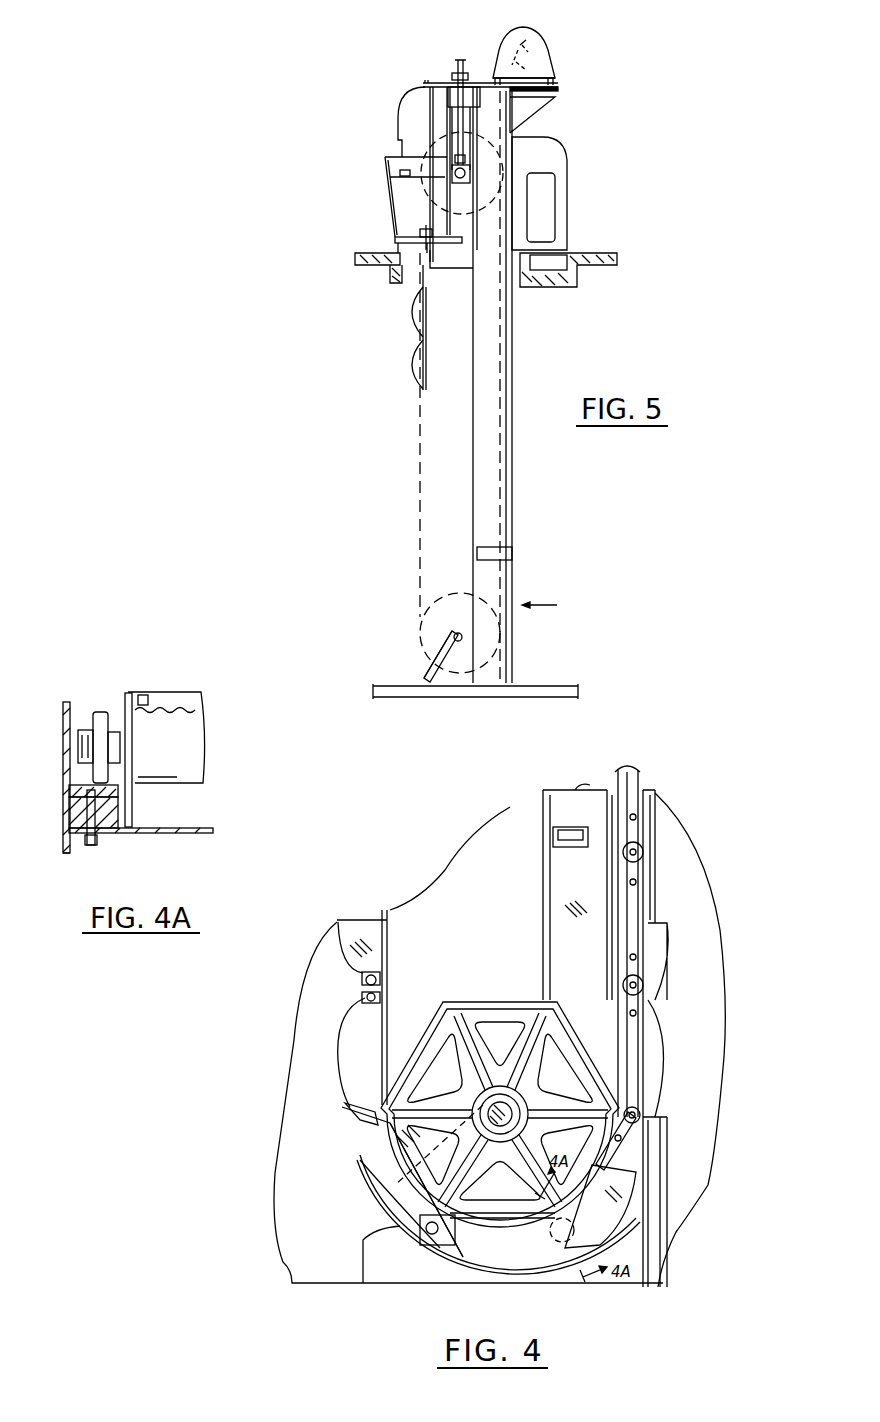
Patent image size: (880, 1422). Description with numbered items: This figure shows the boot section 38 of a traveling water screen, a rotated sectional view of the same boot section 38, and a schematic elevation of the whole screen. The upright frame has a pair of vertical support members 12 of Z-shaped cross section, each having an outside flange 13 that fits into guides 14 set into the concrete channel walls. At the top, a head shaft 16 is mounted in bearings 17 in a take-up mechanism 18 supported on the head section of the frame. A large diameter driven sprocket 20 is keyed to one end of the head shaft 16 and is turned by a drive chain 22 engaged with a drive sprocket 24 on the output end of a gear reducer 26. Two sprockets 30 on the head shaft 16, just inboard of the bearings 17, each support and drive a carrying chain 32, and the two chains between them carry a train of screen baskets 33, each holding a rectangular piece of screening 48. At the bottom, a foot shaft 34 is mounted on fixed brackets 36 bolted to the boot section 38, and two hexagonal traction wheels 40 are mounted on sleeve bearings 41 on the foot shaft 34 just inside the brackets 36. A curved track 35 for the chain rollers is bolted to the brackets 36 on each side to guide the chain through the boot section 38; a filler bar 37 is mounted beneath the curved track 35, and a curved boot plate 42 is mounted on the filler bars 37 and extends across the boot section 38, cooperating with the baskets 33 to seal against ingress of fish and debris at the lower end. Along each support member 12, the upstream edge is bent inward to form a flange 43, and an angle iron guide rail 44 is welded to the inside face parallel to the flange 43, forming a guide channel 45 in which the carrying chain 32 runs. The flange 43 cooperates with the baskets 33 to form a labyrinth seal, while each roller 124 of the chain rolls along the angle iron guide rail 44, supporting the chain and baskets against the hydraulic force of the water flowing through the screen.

In FIG. 5, the vertical support member 12 is at (497, 507).
In FIG. 4, the vertical support member 12 is at (565, 907).
In FIG. 4, the outside flange 13 is at (543, 797).
In FIG. 4, the guide 14 is at (510, 812).
In FIG. 5, the head shaft 16 is at (452, 165).
In FIG. 5, the head shaft bearing 17 is at (457, 185).
In FIG. 5, the take-up mechanism 18 is at (446, 74).
In FIG. 5, the driven sprocket 20 is at (498, 150).
In FIG. 5, the drive chain 22 is at (537, 113).
In FIG. 5, the drive sprocket 24 is at (543, 40).
In FIG. 5, the gear reducer 26 is at (542, 20).
In FIG. 5, the sprocket 30 is at (440, 207).
In FIG. 5, the carrying chain 32 is at (418, 575).
In FIG. 4A, the carrying chain 32 is at (118, 727).
In FIG. 4, the carrying chain 32 is at (633, 785).
In FIG. 5, the screen basket 33 is at (410, 375).
In FIG. 4A, the screen basket 33 is at (175, 700).
In FIG. 4, the screen basket 33 is at (347, 1033).
In FIG. 5, the foot shaft 34 is at (460, 637).
In FIG. 4, the foot shaft 34 is at (500, 1102).
In FIG. 4A, the curved track 35 is at (82, 787).
In FIG. 4, the curved track 35 is at (377, 1183).
In FIG. 5, the bracket 36 is at (453, 663).
In FIG. 4A, the bracket 36 is at (62, 707).
In FIG. 4, the bracket 36 is at (387, 1218).
In FIG. 4A, the filler bar 37 is at (82, 812).
In FIG. 4, the filler bar 37 is at (387, 1230).
In FIG. 5, the boot section 38 is at (408, 650).
In FIG. 4A, the boot section 38 is at (53, 852).
In FIG. 4, the boot section 38 is at (342, 1152).
In FIG. 5, the hexagonal traction wheel 40 is at (480, 595).
In FIG. 4, the hexagonal traction wheel 40 is at (495, 1000).
In FIG. 4, the sleeve bearing 41 is at (483, 1102).
In FIG. 4A, the curved boot plate 42 is at (143, 833).
In FIG. 4, the curved boot plate 42 is at (450, 1267).
In FIG. 4, the flange 43 is at (652, 853).
In FIG. 4, the angle iron guide rail 44 is at (618, 798).
In FIG. 4, the guide channel 45 is at (617, 770).
In FIG. 4, the screening 48 is at (383, 1017).
In FIG. 4A, the roller 124 is at (100, 712).
In FIG. 4, the roller 124 is at (638, 850).